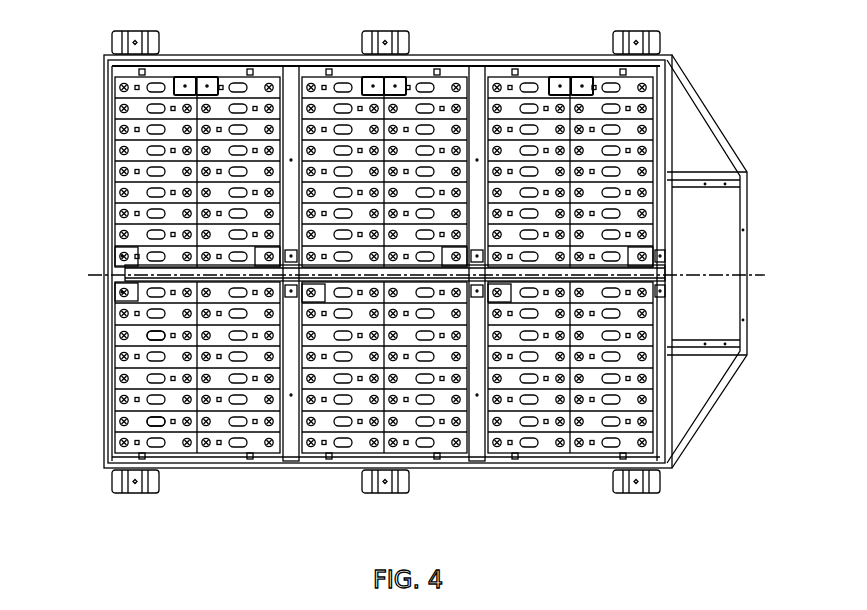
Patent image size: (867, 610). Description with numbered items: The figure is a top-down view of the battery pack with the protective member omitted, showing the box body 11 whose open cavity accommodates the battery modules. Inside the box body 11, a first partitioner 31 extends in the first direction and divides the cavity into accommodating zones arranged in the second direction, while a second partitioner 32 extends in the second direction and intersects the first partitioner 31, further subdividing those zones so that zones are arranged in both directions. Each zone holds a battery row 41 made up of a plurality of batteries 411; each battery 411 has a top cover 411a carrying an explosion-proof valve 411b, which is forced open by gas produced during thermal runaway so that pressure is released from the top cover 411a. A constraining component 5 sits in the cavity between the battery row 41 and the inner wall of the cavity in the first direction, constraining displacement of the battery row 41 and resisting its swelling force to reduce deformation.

The box body 11 is at (707, 418).
The constraining component 5 is at (206, 462).
The first partitioner 31 is at (285, 447).
The second partitioner 32 is at (640, 272).
The battery row 41 is at (168, 82).
The battery 411 is at (122, 193).
The top cover 411a is at (140, 333).
The explosion-proof valve 411b is at (155, 420).